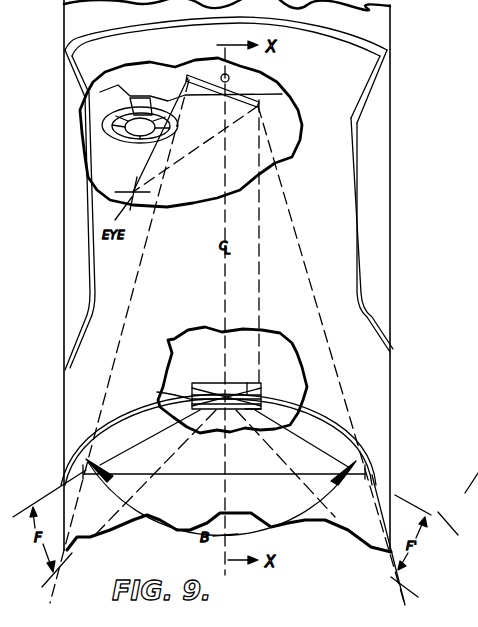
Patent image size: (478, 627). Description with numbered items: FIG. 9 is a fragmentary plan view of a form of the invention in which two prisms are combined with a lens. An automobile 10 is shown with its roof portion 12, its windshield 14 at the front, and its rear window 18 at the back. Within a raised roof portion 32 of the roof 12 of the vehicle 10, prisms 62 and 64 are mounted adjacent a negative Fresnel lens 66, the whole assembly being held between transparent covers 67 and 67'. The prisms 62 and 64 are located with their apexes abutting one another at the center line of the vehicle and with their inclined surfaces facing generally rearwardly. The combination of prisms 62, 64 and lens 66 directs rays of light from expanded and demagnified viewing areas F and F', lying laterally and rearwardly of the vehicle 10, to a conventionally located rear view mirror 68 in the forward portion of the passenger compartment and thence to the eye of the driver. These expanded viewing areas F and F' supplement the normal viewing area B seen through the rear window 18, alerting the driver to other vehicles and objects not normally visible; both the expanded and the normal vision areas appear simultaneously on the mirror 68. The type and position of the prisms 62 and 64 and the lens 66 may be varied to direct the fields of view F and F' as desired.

The automobile 10 is at (33, 0).
The roof portion 12 is at (332, 164).
The windshield 14 is at (190, 50).
The rear window 18 is at (160, 467).
The raised roof portion 32 is at (250, 312).
The prism 62 is at (201, 388).
The prism 64 is at (258, 393).
The negative Fresnel lens 66 is at (163, 391).
The transparent cover 67 is at (268, 430).
The transparent cover 67' is at (244, 372).
The rear view mirror 68 is at (235, 90).